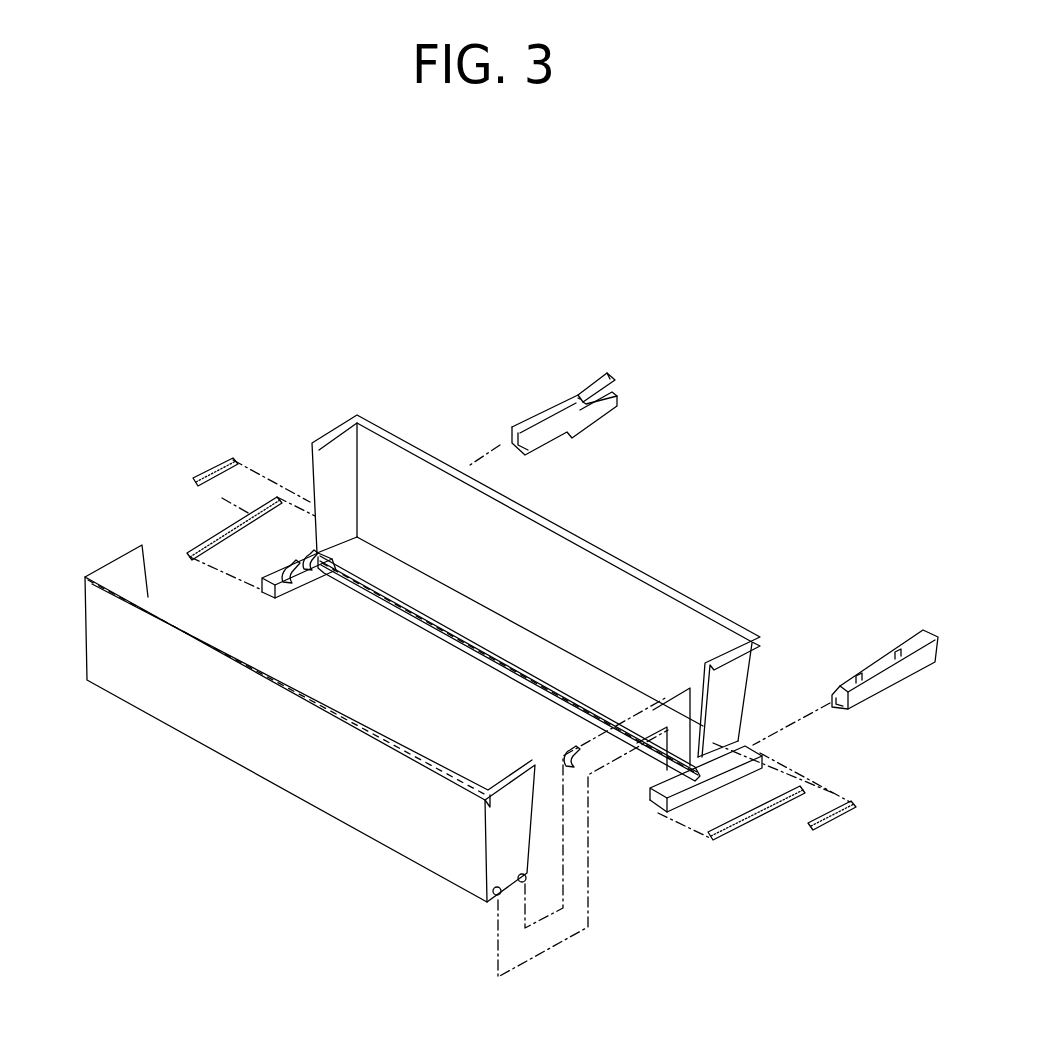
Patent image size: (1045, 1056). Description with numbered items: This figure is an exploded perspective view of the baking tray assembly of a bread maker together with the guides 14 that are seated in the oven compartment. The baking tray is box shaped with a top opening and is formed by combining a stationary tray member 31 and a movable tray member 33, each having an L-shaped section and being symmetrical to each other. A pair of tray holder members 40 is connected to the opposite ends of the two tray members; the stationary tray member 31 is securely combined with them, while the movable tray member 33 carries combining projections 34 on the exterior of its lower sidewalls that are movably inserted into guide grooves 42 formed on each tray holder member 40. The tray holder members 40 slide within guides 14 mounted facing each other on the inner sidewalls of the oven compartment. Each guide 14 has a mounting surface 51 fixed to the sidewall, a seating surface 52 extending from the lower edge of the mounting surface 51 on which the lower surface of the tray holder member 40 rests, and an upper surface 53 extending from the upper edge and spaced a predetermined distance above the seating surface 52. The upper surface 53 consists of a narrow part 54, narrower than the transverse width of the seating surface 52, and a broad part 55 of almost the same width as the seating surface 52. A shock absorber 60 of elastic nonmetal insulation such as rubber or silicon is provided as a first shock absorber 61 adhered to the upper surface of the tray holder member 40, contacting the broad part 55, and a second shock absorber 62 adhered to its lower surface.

The guide 14 is at (650, 412).
The stationary tray member 31 is at (330, 432).
The movable tray member 33 is at (105, 555).
The combining projections 34 is at (524, 885).
The tray holder member 40 is at (270, 590).
The guide grooves 42 is at (300, 578).
The mounting surface 51 is at (545, 437).
The seating surface 52 is at (600, 418).
The upper surface 53 is at (592, 331).
The narrow part 54 is at (540, 398).
The broad part 55 is at (588, 392).
The shock absorber 60 is at (818, 914).
The first shock absorber 61 is at (200, 472).
The second shock absorber 62 is at (195, 545).